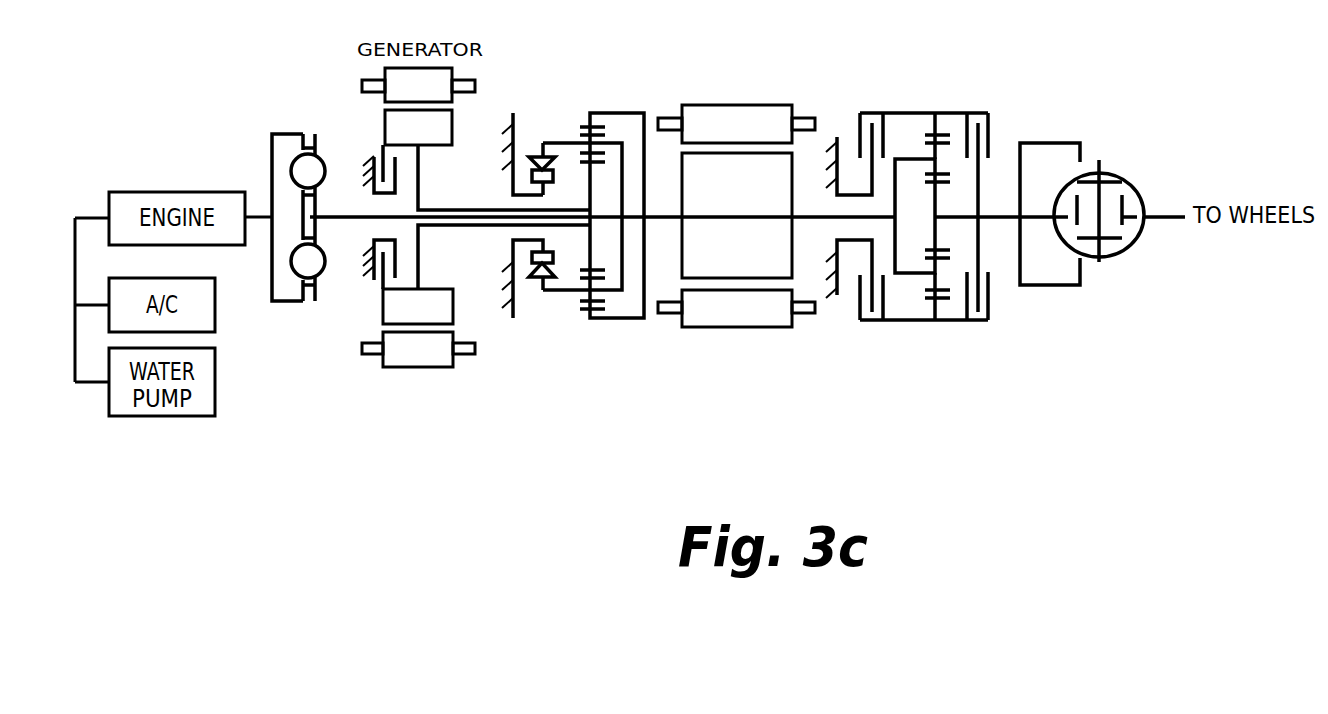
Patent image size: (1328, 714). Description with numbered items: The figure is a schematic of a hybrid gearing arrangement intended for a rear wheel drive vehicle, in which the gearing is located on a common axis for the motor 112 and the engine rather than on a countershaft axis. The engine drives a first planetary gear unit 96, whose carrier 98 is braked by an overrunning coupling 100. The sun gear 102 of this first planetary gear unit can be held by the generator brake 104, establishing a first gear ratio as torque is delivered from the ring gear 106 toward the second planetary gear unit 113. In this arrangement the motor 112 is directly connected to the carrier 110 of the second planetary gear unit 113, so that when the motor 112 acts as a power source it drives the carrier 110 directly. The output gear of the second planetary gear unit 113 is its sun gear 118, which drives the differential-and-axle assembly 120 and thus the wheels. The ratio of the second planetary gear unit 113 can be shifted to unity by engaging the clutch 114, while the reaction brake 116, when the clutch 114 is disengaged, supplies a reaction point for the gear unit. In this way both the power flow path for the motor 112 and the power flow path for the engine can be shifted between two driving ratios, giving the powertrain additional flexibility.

The first planetary gear unit 96 is at (551, 136).
The carrier 98 is at (547, 291).
The overrunning coupling 100 is at (540, 279).
The sun gear 102 is at (592, 183).
The generator brake 104 is at (370, 279).
The ring gear 106 is at (600, 112).
The carrier 110 is at (905, 275).
The motor 112 is at (688, 267).
The second planetary gear unit 113 is at (879, 324).
The clutch 114 is at (985, 135).
The reaction brake 116 is at (888, 132).
The sun gear 118 is at (938, 195).
The differential-and-axle assembly 120 is at (1115, 250).